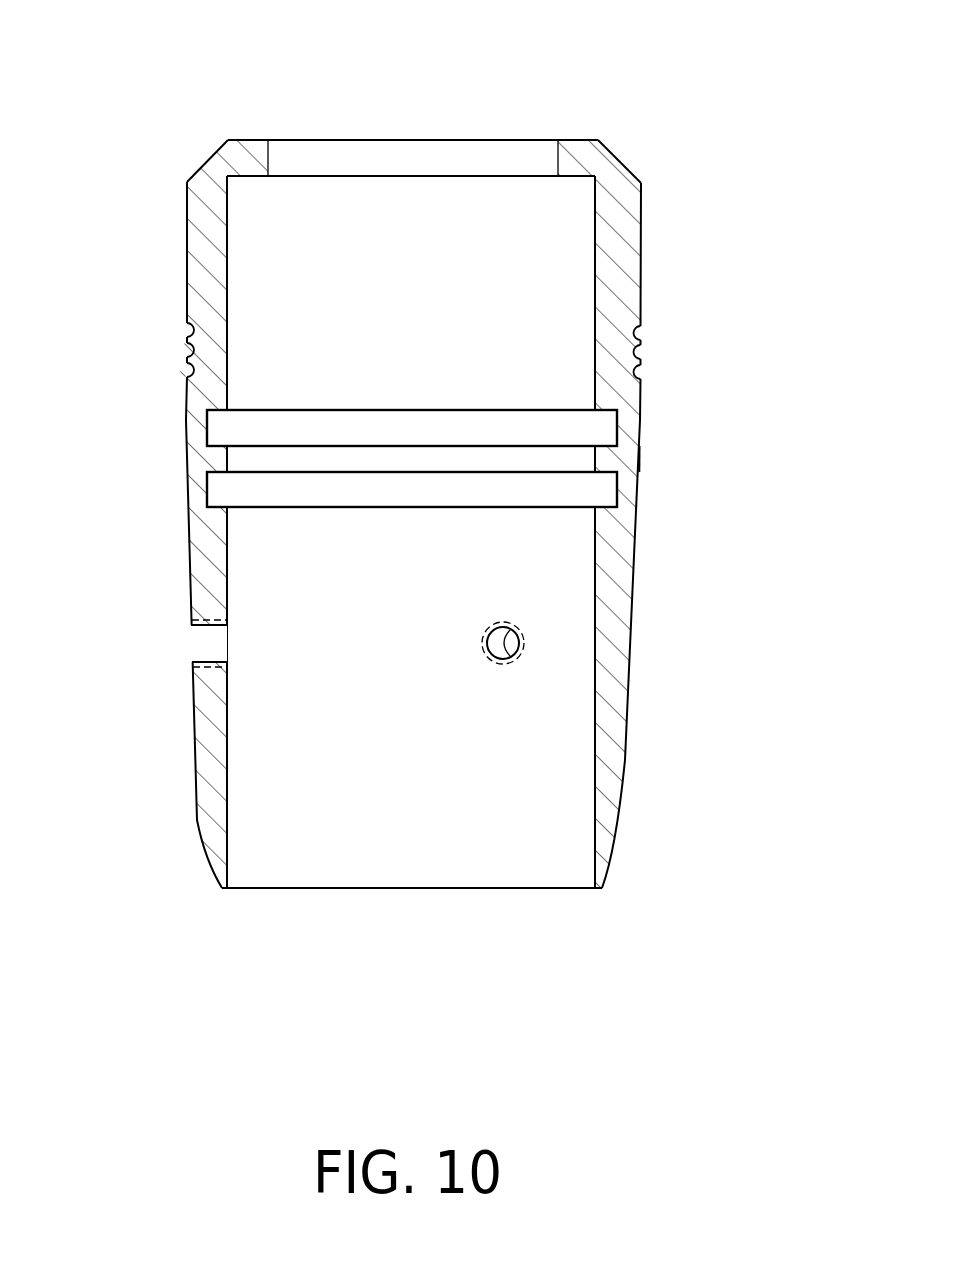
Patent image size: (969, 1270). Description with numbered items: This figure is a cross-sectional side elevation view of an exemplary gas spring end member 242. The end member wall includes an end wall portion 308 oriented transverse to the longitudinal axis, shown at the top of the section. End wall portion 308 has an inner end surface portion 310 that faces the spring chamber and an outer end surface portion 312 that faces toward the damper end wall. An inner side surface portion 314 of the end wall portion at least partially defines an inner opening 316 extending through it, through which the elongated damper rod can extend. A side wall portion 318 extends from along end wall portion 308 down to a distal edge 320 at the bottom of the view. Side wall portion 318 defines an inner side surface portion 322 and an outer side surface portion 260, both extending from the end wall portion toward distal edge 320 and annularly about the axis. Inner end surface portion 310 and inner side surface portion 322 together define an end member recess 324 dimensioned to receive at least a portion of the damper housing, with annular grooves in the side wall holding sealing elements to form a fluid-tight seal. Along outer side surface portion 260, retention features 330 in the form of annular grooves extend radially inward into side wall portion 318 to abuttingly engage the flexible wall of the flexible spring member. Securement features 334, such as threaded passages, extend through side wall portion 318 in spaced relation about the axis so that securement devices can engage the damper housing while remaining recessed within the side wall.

The end member 242 is at (650, 137).
The outer side surface portion 260 is at (640, 451).
The end wall portion 308 is at (577, 152).
The inner end surface portion 310 is at (253, 177).
The outer end surface portion 312 is at (244, 139).
The inner side surface portion 314 is at (270, 153).
The inner opening 316 is at (410, 140).
The side wall portion 318 is at (618, 600).
The distal edge 320 is at (533, 890).
The inner side surface portion 322 is at (595, 770).
The end member recess 324 is at (278, 576).
The retention features 330 is at (185, 370).
The securement features 334 is at (186, 649).